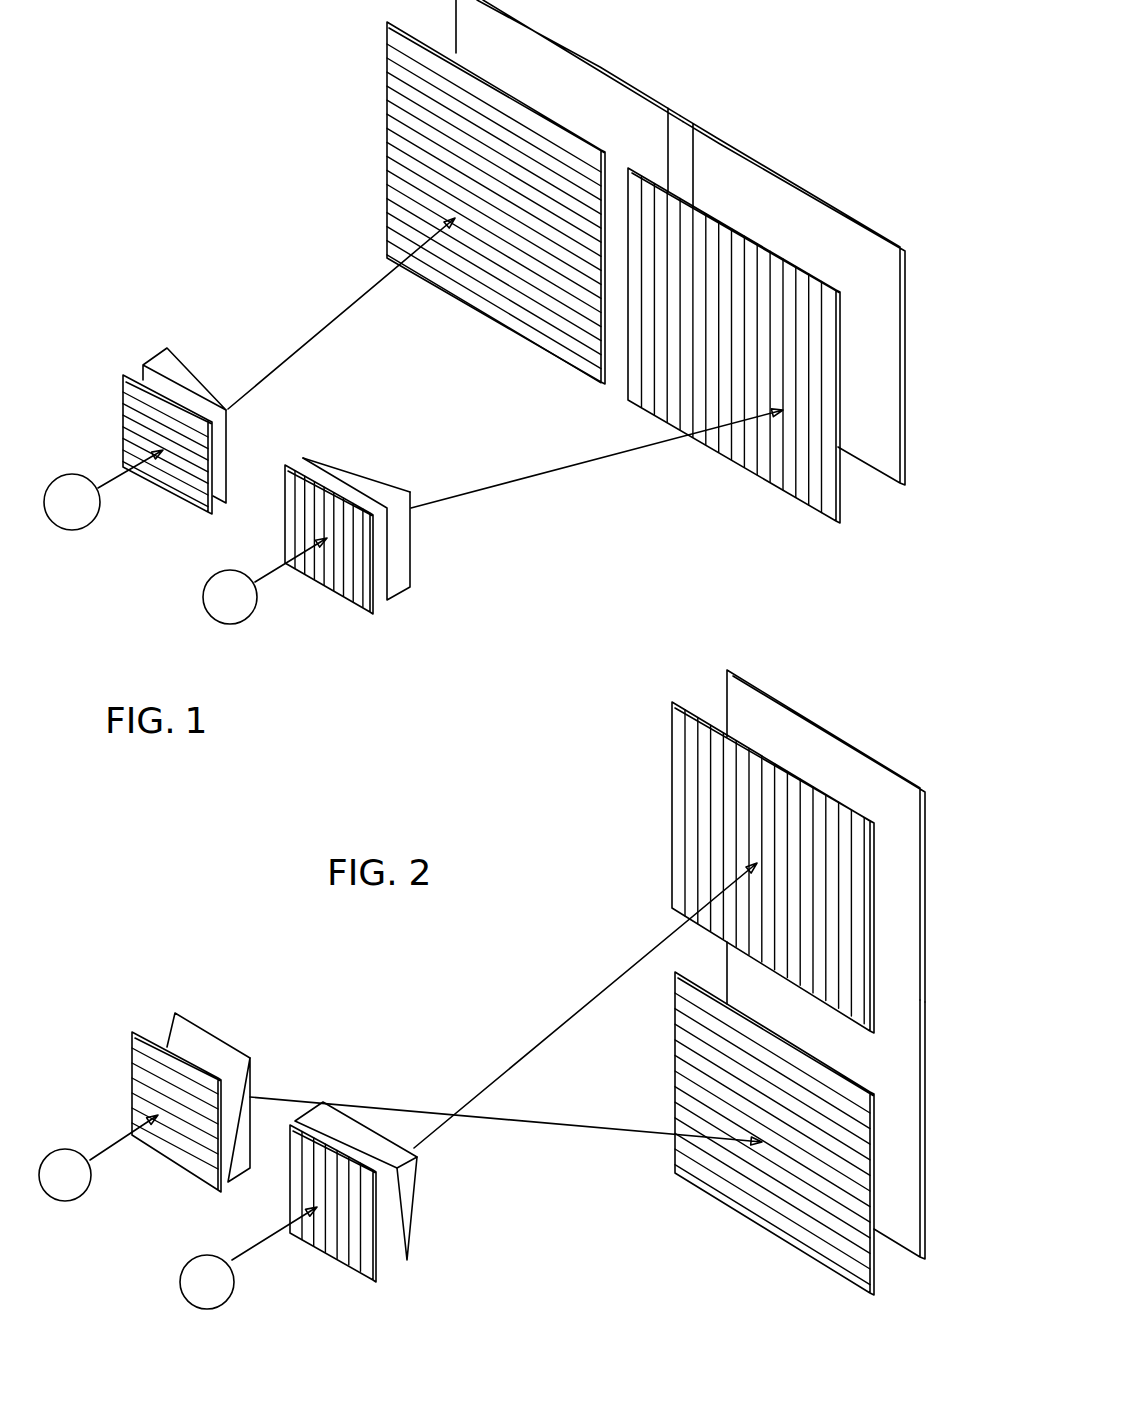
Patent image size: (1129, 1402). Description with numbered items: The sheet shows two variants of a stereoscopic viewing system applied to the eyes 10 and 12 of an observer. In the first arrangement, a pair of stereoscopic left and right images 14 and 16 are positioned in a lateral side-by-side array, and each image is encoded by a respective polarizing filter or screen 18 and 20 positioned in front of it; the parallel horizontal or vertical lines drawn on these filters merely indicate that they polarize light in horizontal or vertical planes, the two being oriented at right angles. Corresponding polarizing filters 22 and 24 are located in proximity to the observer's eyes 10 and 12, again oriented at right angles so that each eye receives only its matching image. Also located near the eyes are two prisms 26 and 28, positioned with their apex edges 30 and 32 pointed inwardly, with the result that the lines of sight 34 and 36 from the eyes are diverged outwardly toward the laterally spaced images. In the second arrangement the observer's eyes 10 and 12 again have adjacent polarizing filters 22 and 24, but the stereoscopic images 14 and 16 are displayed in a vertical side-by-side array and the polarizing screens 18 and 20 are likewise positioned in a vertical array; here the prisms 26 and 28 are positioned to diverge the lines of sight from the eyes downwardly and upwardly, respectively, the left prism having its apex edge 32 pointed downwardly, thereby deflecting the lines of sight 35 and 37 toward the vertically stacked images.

In FIG. 1, the eye 10 is at (78, 513).
In FIG. 2, the eye 10 is at (68, 1190).
In FIG. 1, the eye 12 is at (212, 602).
In FIG. 2, the eye 12 is at (190, 1303).
In FIG. 1, the left stereoscopic image 14 is at (568, 72).
In FIG. 2, the left stereoscopic image 14 is at (903, 1107).
In FIG. 1, the right stereoscopic image 16 is at (795, 215).
In FIG. 2, the right stereoscopic image 16 is at (908, 843).
In FIG. 1, the polarizing filter 18 is at (408, 137).
In FIG. 2, the polarizing filter 18 is at (717, 1188).
In FIG. 1, the polarizing filter 20 is at (800, 475).
In FIG. 2, the polarizing filter 20 is at (690, 845).
In FIG. 1, the polarizing filter 22 is at (120, 392).
In FIG. 2, the polarizing filter 22 is at (130, 1050).
In FIG. 1, the polarizing filter 24 is at (345, 583).
In FIG. 2, the polarizing filter 24 is at (352, 1252).
In FIG. 1, the prism 26 is at (218, 415).
In FIG. 2, the prism 26 is at (233, 1073).
In FIG. 1, the prism 28 is at (392, 508).
In FIG. 2, the prism 28 is at (386, 1187).
In FIG. 1, the apex edge 30 is at (232, 458).
In FIG. 2, the apex edge 30 is at (237, 1048).
In FIG. 1, the apex edge 32 is at (300, 456).
In FIG. 2, the apex edge 32 is at (412, 1242).
In FIG. 1, the line of sight 34 is at (330, 326).
In FIG. 2, the line of sight 35 is at (498, 1123).
In FIG. 1, the line of sight 36 is at (540, 478).
In FIG. 2, the line of sight 37 is at (557, 1023).